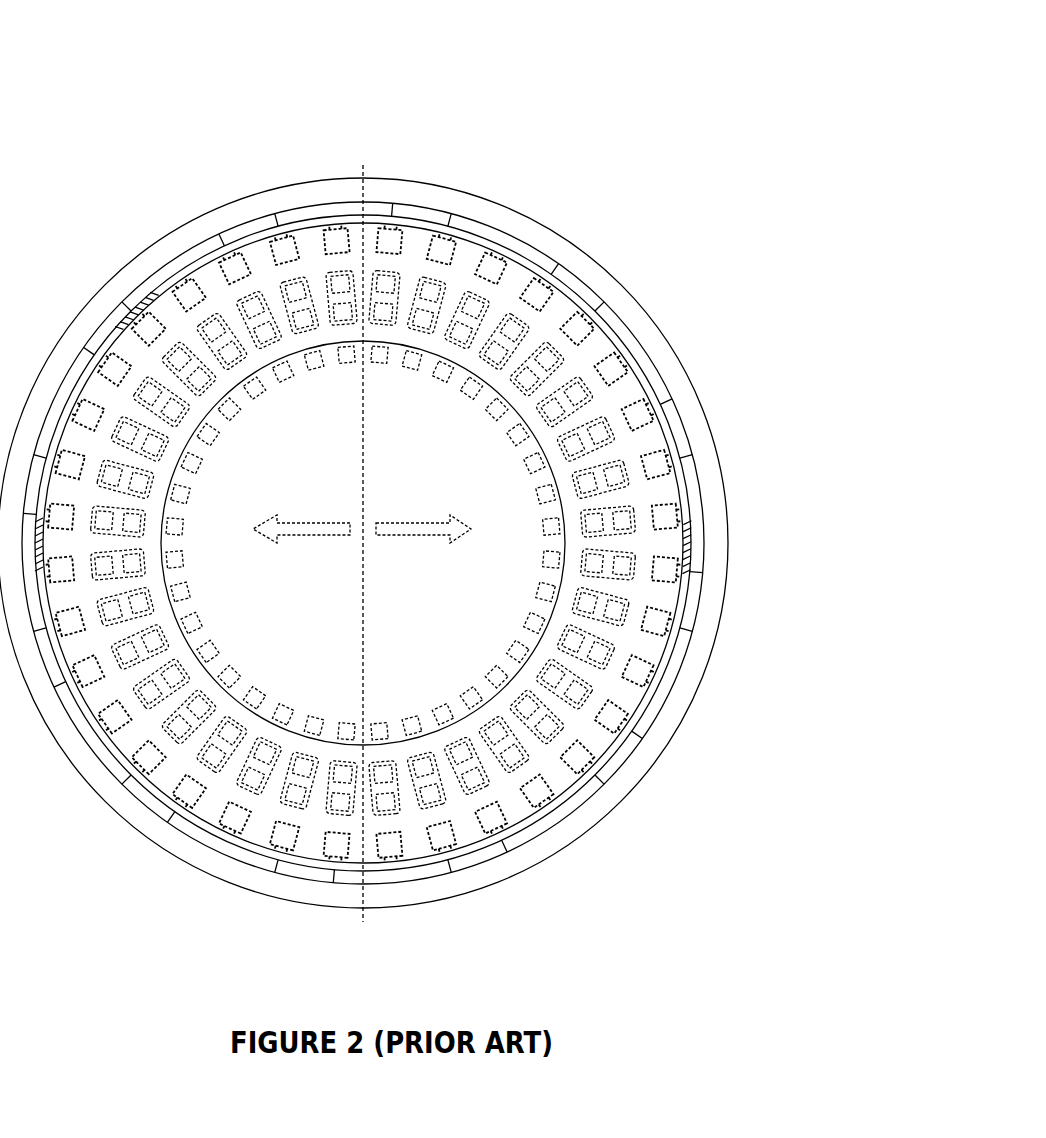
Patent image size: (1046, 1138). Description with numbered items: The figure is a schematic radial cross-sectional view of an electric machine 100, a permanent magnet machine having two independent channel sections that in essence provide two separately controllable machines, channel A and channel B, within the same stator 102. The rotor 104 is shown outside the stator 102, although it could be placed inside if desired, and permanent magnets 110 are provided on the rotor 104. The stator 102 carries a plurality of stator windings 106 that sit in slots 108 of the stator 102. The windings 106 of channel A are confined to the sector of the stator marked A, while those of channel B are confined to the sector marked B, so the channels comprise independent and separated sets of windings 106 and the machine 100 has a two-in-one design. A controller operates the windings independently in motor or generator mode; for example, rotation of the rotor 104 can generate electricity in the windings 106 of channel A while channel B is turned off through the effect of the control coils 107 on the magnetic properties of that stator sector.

The electric machine 100 is at (573, 110).
The stator 102 is at (503, 291).
The rotor 104 is at (620, 278).
The stator windings 106 is at (585, 318).
The control coils 107 is at (716, 284).
The slots 108 is at (671, 405).
The permanent magnets 110 is at (698, 508).